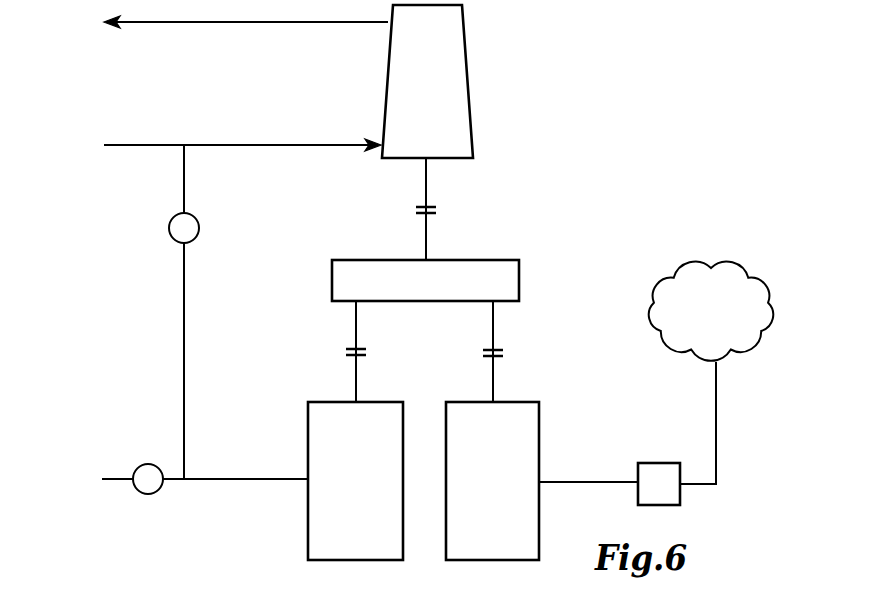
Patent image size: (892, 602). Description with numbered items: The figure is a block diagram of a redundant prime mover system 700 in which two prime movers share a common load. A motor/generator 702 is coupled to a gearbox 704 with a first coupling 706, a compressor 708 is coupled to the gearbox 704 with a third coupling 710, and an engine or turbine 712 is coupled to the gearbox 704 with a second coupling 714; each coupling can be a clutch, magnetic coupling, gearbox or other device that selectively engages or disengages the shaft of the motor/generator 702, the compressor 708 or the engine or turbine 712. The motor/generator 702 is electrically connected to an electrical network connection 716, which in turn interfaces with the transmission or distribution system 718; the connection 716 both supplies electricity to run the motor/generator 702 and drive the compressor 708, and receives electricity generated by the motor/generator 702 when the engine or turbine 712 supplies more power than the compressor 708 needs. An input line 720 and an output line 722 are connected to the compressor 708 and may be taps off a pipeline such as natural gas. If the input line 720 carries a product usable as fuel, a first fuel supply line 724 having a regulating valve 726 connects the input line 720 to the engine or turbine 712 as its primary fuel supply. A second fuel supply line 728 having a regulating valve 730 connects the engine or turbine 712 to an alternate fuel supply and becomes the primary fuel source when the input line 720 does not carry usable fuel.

The redundant prime mover system 700 is at (578, 122).
The motor/generator 702 is at (540, 440).
The gearbox 704 is at (519, 279).
The first coupling 706 is at (503, 352).
The compressor 708 is at (467, 52).
The third coupling 710 is at (438, 211).
The engine or turbine 712 is at (308, 437).
The second coupling 714 is at (345, 352).
The electrical network connection 716 is at (657, 463).
The transmission or distribution system 718 is at (717, 262).
The input line 720 is at (147, 144).
The output line 722 is at (229, 24).
The first fuel supply line 724 is at (183, 335).
The regulating valve 726 is at (170, 222).
The second fuel supply line 728 is at (205, 481).
The regulating valve 730 is at (147, 463).